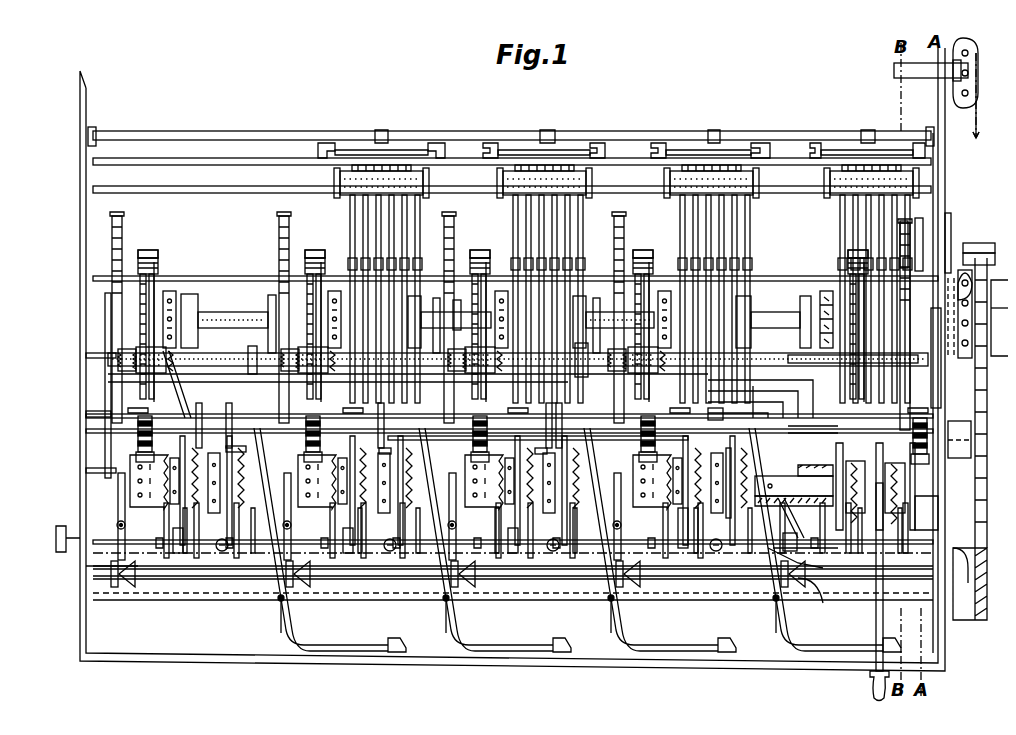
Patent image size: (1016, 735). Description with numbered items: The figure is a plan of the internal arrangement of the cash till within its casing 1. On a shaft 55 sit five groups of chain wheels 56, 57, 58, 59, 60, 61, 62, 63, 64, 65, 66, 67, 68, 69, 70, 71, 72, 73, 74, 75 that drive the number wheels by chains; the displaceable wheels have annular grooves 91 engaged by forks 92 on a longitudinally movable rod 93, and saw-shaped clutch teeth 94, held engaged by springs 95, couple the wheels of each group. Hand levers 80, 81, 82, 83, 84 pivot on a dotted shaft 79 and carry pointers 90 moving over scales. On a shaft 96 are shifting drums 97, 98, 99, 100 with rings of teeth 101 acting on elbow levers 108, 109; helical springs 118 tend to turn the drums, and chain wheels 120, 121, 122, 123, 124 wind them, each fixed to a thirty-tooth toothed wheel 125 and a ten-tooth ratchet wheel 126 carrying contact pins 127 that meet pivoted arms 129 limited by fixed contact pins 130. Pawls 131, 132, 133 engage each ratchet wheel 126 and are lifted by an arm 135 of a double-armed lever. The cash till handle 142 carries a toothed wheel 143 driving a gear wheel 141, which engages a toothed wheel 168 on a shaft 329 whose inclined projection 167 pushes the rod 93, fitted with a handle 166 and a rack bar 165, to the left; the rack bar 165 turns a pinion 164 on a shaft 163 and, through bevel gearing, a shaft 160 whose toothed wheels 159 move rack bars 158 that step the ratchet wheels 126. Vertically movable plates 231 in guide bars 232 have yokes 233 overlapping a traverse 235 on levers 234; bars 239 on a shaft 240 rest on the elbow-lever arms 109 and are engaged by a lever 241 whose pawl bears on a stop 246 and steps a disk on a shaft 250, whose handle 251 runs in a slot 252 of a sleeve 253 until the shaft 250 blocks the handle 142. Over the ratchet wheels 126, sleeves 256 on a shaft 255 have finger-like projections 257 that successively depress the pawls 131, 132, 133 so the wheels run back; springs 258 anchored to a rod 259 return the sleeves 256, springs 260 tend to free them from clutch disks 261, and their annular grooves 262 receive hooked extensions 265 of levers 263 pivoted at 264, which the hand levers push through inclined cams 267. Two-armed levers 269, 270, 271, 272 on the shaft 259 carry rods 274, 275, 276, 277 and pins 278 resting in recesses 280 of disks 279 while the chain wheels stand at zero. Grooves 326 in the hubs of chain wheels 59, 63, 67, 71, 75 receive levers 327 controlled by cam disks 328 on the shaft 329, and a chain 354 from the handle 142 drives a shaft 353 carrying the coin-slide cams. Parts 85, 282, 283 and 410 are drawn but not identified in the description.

The casing 1 is at (72, 440).
The shaft 55 is at (80, 462).
The chain wheel 56 is at (895, 518).
The chain wheel 57 is at (843, 518).
The chain wheel 58 is at (820, 528).
The chain wheel 59 is at (792, 528).
The chain wheel 60 is at (735, 474).
The chain wheel 61 is at (714, 494).
The chain wheel 62 is at (655, 520).
The chain wheel 63 is at (624, 516).
The chain wheel 64 is at (569, 530).
The chain wheel 65 is at (537, 530).
The chain wheel 66 is at (488, 518).
The chain wheel 67 is at (453, 516).
The chain wheel 68 is at (409, 530).
The chain wheel 69 is at (372, 530).
The chain wheel 70 is at (337, 530).
The chain wheel 71 is at (283, 520).
The chain wheel 72 is at (245, 530).
The chain wheel 73 is at (206, 530).
The chain wheel 74 is at (160, 530).
The chain wheel 75 is at (117, 520).
The shaft 79 is at (926, 513).
The hand lever 80 is at (868, 608).
The hand lever 81 is at (688, 529).
The hand lever 82 is at (519, 540).
The hand lever 83 is at (354, 540).
The hand lever 84 is at (182, 538).
The stop bar 85 is at (705, 505).
The pointer 90 is at (862, 672).
The annular groove 91 is at (925, 440).
The fork 92 is at (539, 539).
The rod 93 is at (78, 558).
The clutch teeth 94 is at (528, 499).
The spring 95 is at (775, 505).
The shaft 96 is at (80, 320).
The shifting drum 97 is at (832, 270).
The shifting drum 98 is at (728, 270).
The shifting drum 99 is at (558, 265).
The shifting drum 100 is at (372, 262).
The rings of teeth 101 is at (380, 245).
The elbow lever 108 is at (385, 215).
The elbow lever 109 is at (344, 200).
The helical spring 118 is at (190, 297).
The chain wheel 120 is at (814, 290).
The chain wheel 121 is at (657, 286).
The chain wheel 122 is at (493, 285).
The chain wheel 123 is at (325, 286).
The chain wheel 124 is at (160, 283).
The toothed wheel 125 is at (114, 215).
The ratchet wheel 126 is at (150, 248).
The contact pin 127 is at (264, 300).
The arm 129 is at (80, 400).
The fixed contact pin 130 is at (80, 386).
The pawl 131 is at (138, 242).
The pawl 132 is at (146, 262).
The pawl 133 is at (143, 280).
The arm 135 is at (132, 400).
The gear wheel 141 is at (980, 405).
The cash till handle 142 is at (985, 346).
The toothed wheel 143 is at (985, 348).
The rack bar 158 is at (128, 446).
The toothed wheel 159 is at (130, 425).
The shaft 160 is at (85, 410).
The shaft 163 is at (805, 541).
The toothed pinion 164 is at (816, 496).
The rack bar 165 is at (821, 590).
The handle 166 is at (48, 530).
The inclined projection 167 is at (955, 540).
The toothed wheel 168 is at (968, 600).
The plate 231 is at (350, 142).
The guide bar 232 is at (315, 135).
The yoke 233 is at (374, 122).
The lever 234 is at (88, 153).
The traverse 235 is at (90, 122).
The bar 239 is at (418, 175).
The shaft 240 is at (165, 160).
The lever 241 is at (915, 215).
The stop 246 is at (943, 220).
The shaft 250 is at (987, 240).
The handle 251 is at (987, 252).
The slot 252 is at (900, 214).
The sleeve 253 is at (975, 280).
The shaft 255 is at (790, 348).
The sleeve 256 is at (142, 366).
The finger-like projection 257 is at (450, 296).
The spring 258 is at (165, 370).
The rod 259 is at (190, 398).
The spring 260 is at (744, 306).
The clutch disk 261 is at (112, 363).
The annular groove 262 is at (250, 344).
The lever 263 is at (282, 612).
The pivot 264 is at (272, 595).
The extension 265 is at (210, 366).
The inclined cam 267 is at (384, 630).
The two-armed lever 269 is at (715, 416).
The two-armed lever 270 is at (520, 428).
The two-armed lever 271 is at (372, 398).
The two-armed lever 272 is at (228, 438).
The rod 274 is at (777, 395).
The rod 275 is at (540, 392).
The rod 276 is at (376, 392).
The rod 277 is at (222, 395).
The pin 278 is at (380, 565).
The disk 279 is at (195, 570).
The recess 280 is at (170, 575).
The post 282 is at (555, 392).
The chain 283 is at (955, 350).
The groove 326 is at (122, 475).
The lever 327 is at (120, 500).
The cam disk 328 is at (110, 580).
The shaft 329 is at (85, 592).
The shaft 353 is at (905, 70).
The chain 354 is at (990, 98).
The bar 410 is at (228, 185).